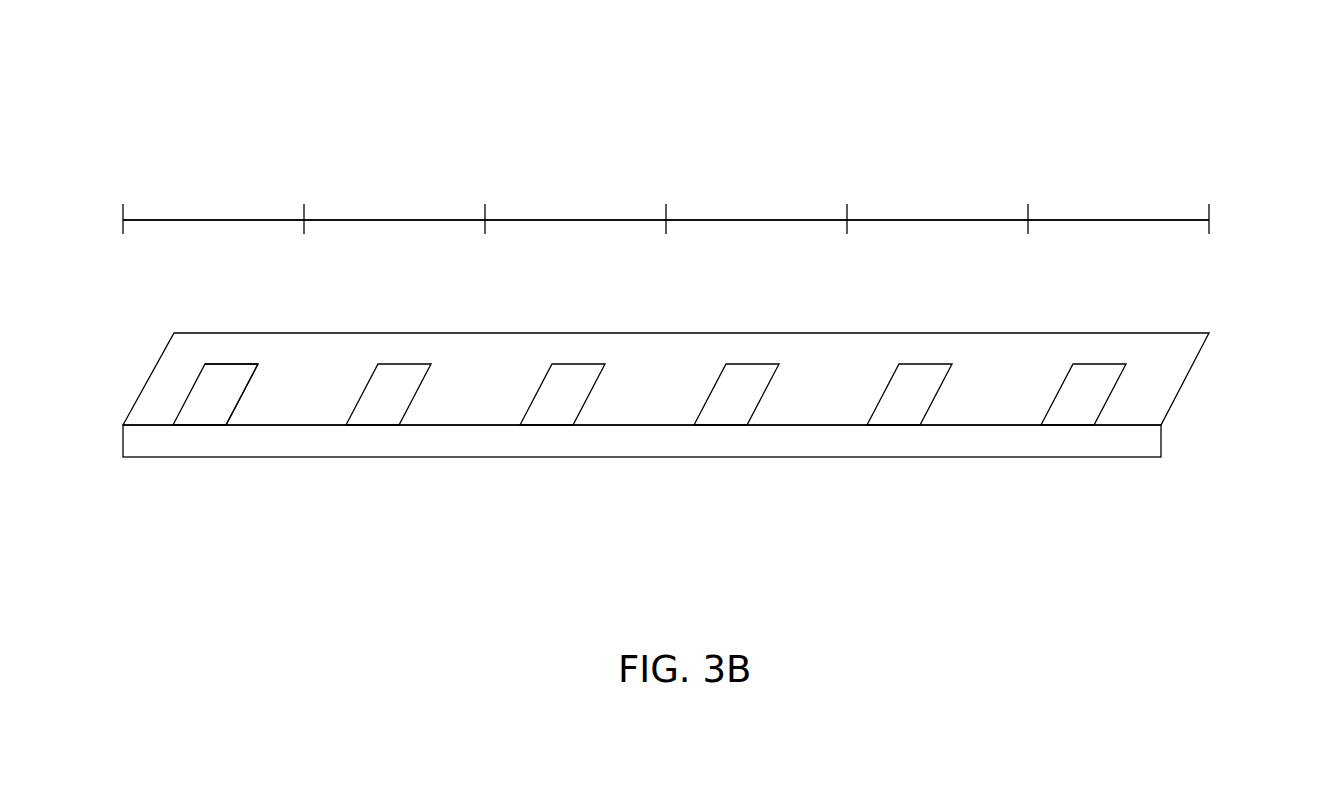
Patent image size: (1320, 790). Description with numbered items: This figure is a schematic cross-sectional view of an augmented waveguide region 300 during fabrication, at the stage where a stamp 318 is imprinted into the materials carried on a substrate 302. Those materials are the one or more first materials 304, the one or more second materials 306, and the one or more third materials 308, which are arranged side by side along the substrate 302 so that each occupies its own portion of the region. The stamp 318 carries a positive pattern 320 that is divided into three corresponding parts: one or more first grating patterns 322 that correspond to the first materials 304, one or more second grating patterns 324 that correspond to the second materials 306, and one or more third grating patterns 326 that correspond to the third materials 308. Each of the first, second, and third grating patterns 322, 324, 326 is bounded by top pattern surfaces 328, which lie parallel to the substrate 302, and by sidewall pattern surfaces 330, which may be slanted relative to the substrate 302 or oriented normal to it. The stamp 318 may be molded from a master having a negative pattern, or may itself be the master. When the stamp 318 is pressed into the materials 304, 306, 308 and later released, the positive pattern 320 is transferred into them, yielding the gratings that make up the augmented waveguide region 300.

The augmented waveguide region 300 is at (1187, 111).
The substrate 302 is at (1161, 433).
The one or more first materials 304 is at (208, 403).
The one or more second materials 306 is at (556, 403).
The one or more third materials 308 is at (903, 403).
The stamp 318 is at (1193, 369).
The positive pattern 320 is at (676, 145).
The one or more first grating patterns 322 is at (213, 219).
The one or more second grating patterns 324 is at (575, 219).
The one or more third grating patterns 326 is at (936, 219).
The top pattern surfaces 328 is at (218, 352).
The sidewall pattern surfaces 330 is at (259, 386).